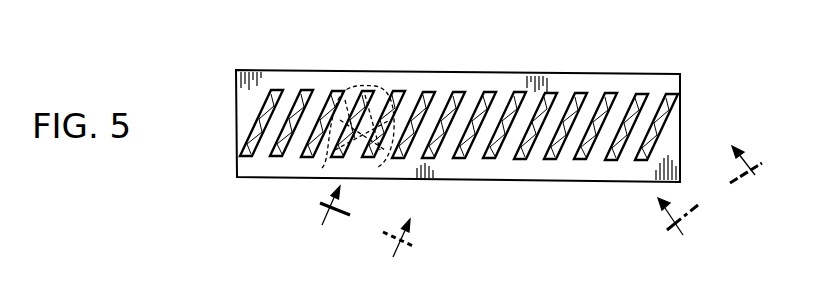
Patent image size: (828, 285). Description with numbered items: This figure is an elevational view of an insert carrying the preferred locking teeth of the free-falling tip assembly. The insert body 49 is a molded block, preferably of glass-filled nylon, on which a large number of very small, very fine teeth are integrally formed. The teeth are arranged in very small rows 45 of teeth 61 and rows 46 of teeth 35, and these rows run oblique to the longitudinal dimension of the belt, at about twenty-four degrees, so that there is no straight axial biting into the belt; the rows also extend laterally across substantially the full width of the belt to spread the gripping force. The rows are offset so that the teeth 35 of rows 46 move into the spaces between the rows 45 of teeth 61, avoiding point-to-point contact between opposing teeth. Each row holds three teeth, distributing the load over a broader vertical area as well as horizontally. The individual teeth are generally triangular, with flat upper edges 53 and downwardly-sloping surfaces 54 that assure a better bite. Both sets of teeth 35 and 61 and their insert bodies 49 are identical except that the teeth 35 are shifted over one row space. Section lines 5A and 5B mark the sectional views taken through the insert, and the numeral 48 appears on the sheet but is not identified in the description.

The second set of teeth 35 is at (327, 180).
The rows of teeth 45 is at (272, 123).
The rows of teeth 46 is at (377, 76).
The element 48 is at (144, 284).
The insert body 49 is at (475, 73).
The flat upper edges 53 is at (527, 88).
The downwardly-sloping surfaces 54 is at (512, 136).
The first set of teeth 61 is at (264, 153).
The section line 5A- 5A is at (356, 235).
The section line 5B- 5B is at (721, 205).